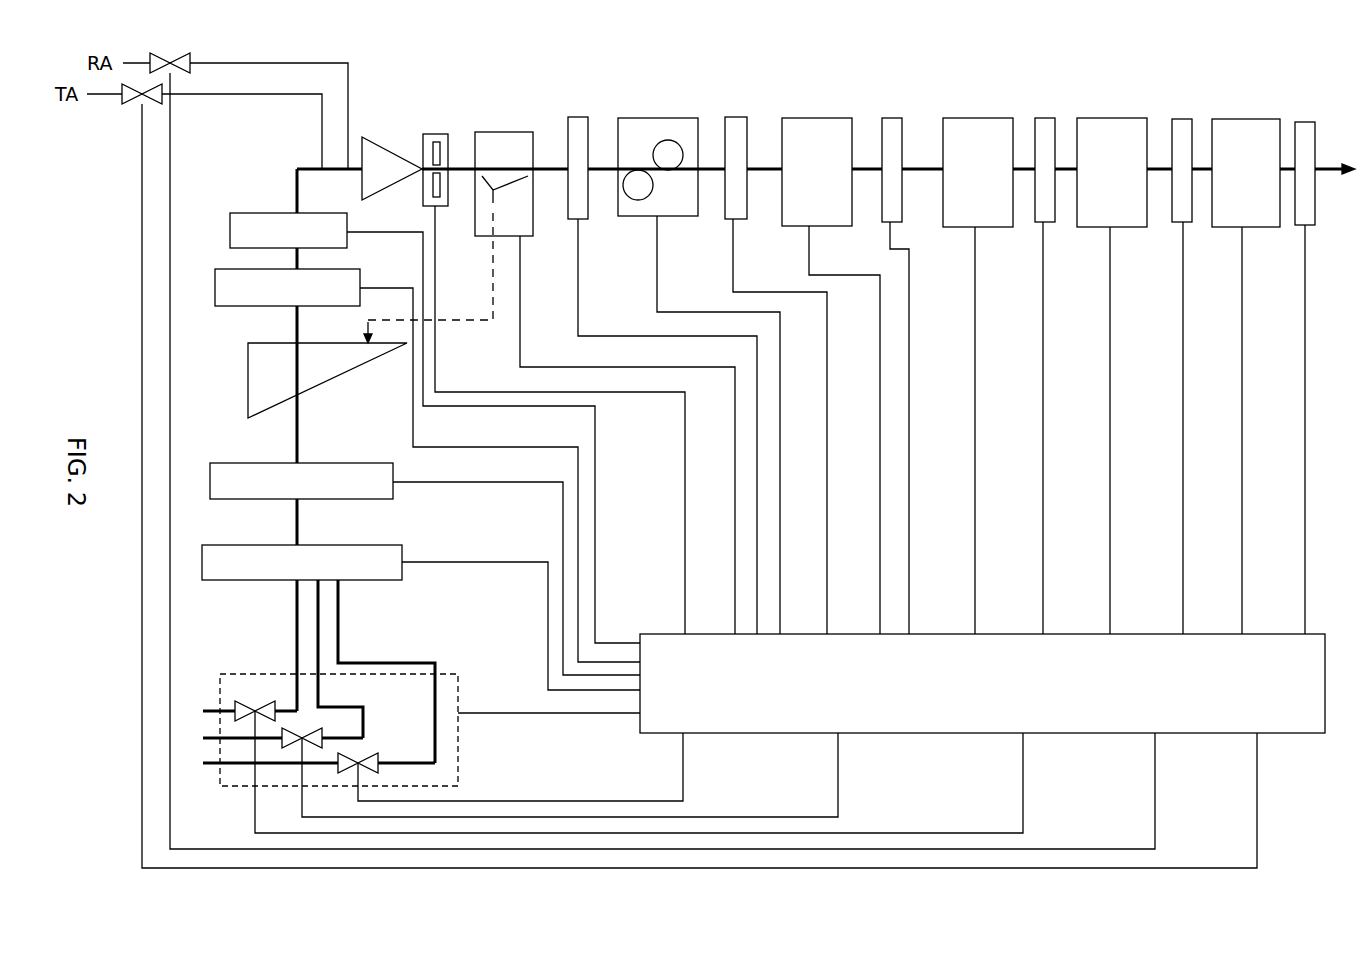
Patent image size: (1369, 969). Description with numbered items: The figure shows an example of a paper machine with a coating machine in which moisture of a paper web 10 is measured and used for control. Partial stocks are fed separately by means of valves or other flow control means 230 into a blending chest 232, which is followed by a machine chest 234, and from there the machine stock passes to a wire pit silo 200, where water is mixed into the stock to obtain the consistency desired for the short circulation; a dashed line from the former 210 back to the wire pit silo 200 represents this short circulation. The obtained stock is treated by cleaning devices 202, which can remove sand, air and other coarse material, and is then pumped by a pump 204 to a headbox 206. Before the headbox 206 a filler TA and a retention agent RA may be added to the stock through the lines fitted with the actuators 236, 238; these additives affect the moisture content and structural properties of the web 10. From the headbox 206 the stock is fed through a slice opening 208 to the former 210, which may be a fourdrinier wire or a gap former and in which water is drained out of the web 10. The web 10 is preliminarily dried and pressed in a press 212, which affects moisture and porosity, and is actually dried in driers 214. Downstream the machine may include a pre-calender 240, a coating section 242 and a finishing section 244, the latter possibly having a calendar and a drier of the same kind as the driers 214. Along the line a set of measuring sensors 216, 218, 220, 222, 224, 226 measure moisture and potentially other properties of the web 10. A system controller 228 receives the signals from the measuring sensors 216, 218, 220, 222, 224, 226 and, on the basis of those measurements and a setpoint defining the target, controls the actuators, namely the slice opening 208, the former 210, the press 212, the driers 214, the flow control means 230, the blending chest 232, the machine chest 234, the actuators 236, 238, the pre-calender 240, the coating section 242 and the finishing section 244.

The paper web 10 is at (460, 168).
The wire pit silo 200 is at (333, 380).
The cleaning devices 202 is at (247, 307).
The pump 204 is at (273, 212).
The headbox 206 is at (370, 137).
The slice opening 208 is at (422, 183).
The former 210 is at (493, 131).
The press 212 is at (645, 118).
The driers 214 is at (828, 117).
The measuring sensor 216 is at (582, 116).
The measuring sensor 218 is at (737, 117).
The measuring sensor 220 is at (893, 117).
The measuring sensor 222 is at (1045, 117).
The measuring sensor 224 is at (1188, 117).
The measuring sensor 226 is at (1312, 120).
The system controller 228 is at (683, 670).
The flow control means 230 is at (263, 673).
The blending chest 232 is at (357, 545).
The machine chest 234 is at (340, 463).
The actuator 236 is at (169, 60).
The actuator 238 is at (130, 100).
The pre-calender 240 is at (972, 117).
The coating section 242 is at (1123, 118).
The finishing section 244 is at (1248, 118).